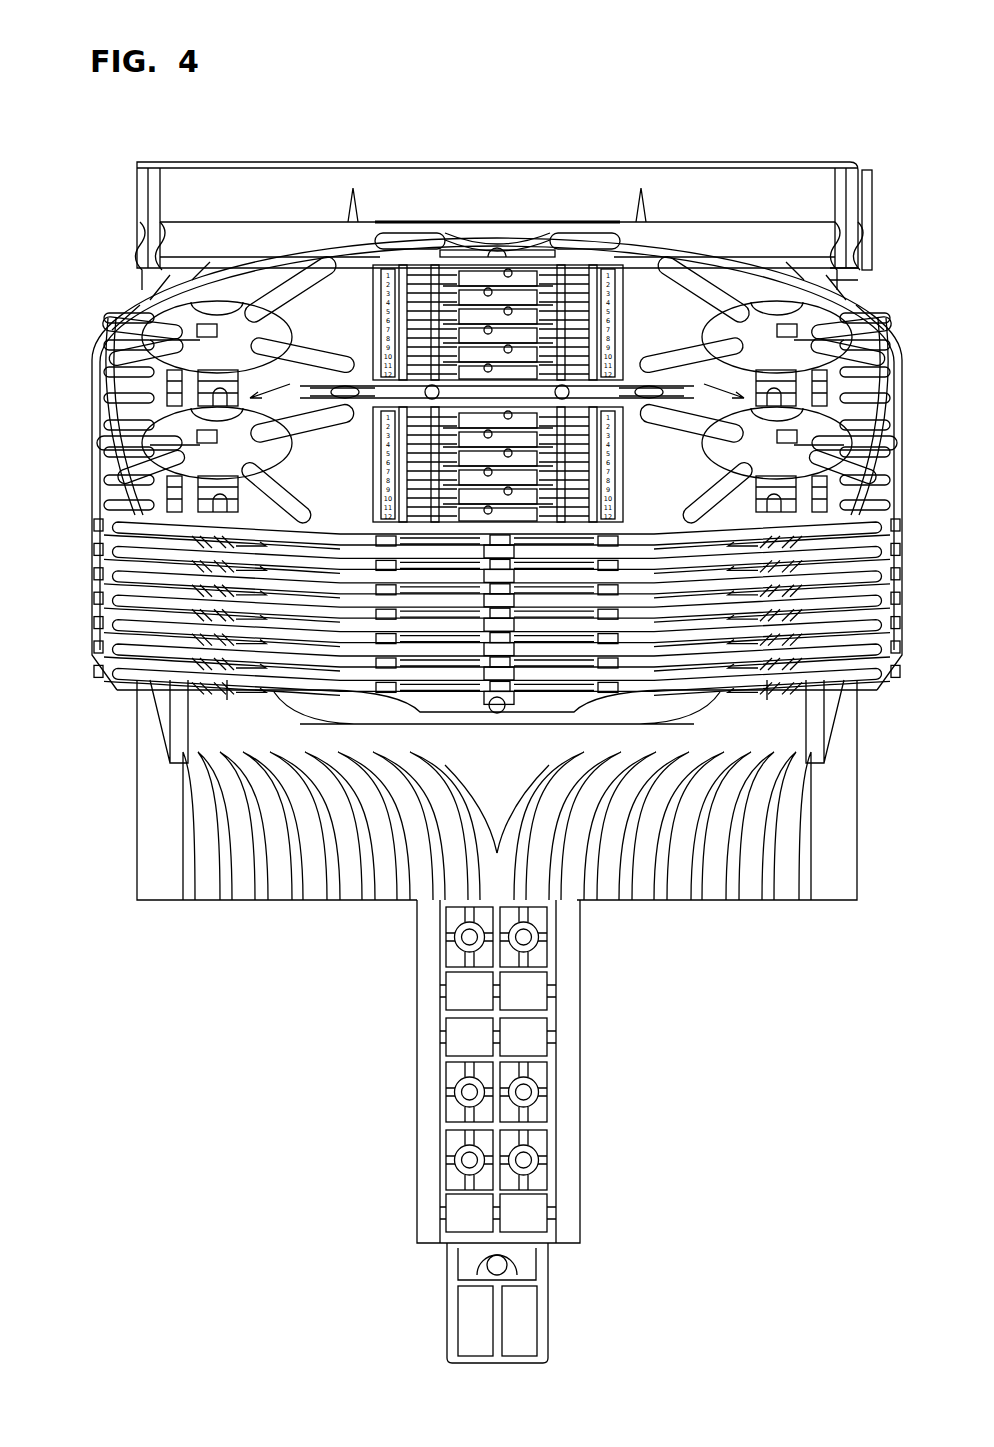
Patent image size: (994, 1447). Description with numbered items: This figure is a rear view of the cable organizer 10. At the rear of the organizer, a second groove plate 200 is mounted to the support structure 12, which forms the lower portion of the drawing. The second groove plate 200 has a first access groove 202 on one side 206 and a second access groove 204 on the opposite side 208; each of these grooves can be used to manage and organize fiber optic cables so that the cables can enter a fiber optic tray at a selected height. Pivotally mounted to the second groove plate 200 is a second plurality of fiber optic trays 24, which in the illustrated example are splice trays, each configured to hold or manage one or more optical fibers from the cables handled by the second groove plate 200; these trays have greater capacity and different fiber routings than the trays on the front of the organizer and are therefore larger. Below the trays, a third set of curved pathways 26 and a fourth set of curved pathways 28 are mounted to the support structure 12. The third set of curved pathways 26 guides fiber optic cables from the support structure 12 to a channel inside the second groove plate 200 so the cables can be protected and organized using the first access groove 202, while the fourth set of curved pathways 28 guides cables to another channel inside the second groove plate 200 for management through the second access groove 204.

The cable organizer 10 is at (852, 90).
The support structure 12 is at (582, 1162).
The second plurality of fiber optic trays 24 is at (100, 362).
The third set of curved pathways 26 is at (782, 830).
The fourth set of curved pathways 28 is at (220, 820).
The second groove plate 200 is at (746, 234).
The first access groove 202 is at (855, 283).
The second access groove 204 is at (150, 290).
The side 206 is at (862, 232).
The opposite side 208 is at (140, 238).